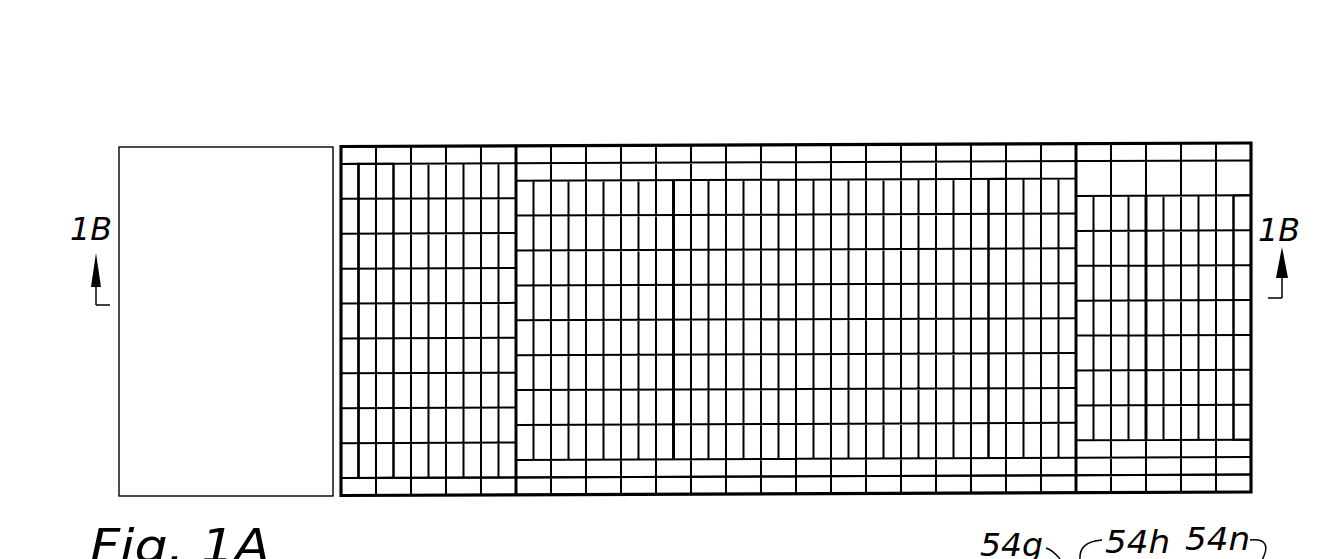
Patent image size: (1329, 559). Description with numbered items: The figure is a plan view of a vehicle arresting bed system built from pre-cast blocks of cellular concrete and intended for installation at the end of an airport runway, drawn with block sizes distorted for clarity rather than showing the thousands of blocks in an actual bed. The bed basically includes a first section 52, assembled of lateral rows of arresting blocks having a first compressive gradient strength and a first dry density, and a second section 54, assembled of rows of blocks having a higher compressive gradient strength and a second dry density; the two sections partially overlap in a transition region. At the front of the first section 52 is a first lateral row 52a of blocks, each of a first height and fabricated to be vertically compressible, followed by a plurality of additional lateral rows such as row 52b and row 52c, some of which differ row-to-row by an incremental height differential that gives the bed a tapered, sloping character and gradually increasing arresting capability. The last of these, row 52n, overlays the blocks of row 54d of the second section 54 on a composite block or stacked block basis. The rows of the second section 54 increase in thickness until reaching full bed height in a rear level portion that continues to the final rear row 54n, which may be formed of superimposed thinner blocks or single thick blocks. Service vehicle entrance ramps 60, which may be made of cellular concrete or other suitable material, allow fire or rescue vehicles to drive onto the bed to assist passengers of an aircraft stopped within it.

The first section 52 is at (342, 91).
The second section 54 is at (1006, 91).
The first lateral row 52a is at (348, 184).
The lateral row 52b is at (368, 177).
The lateral row 52c is at (386, 177).
The lateral row 52n is at (908, 269).
The lateral row 54d is at (997, 195).
The final rear row 54n is at (1243, 210).
The service vehicle entrance ramp 60 is at (812, 484).